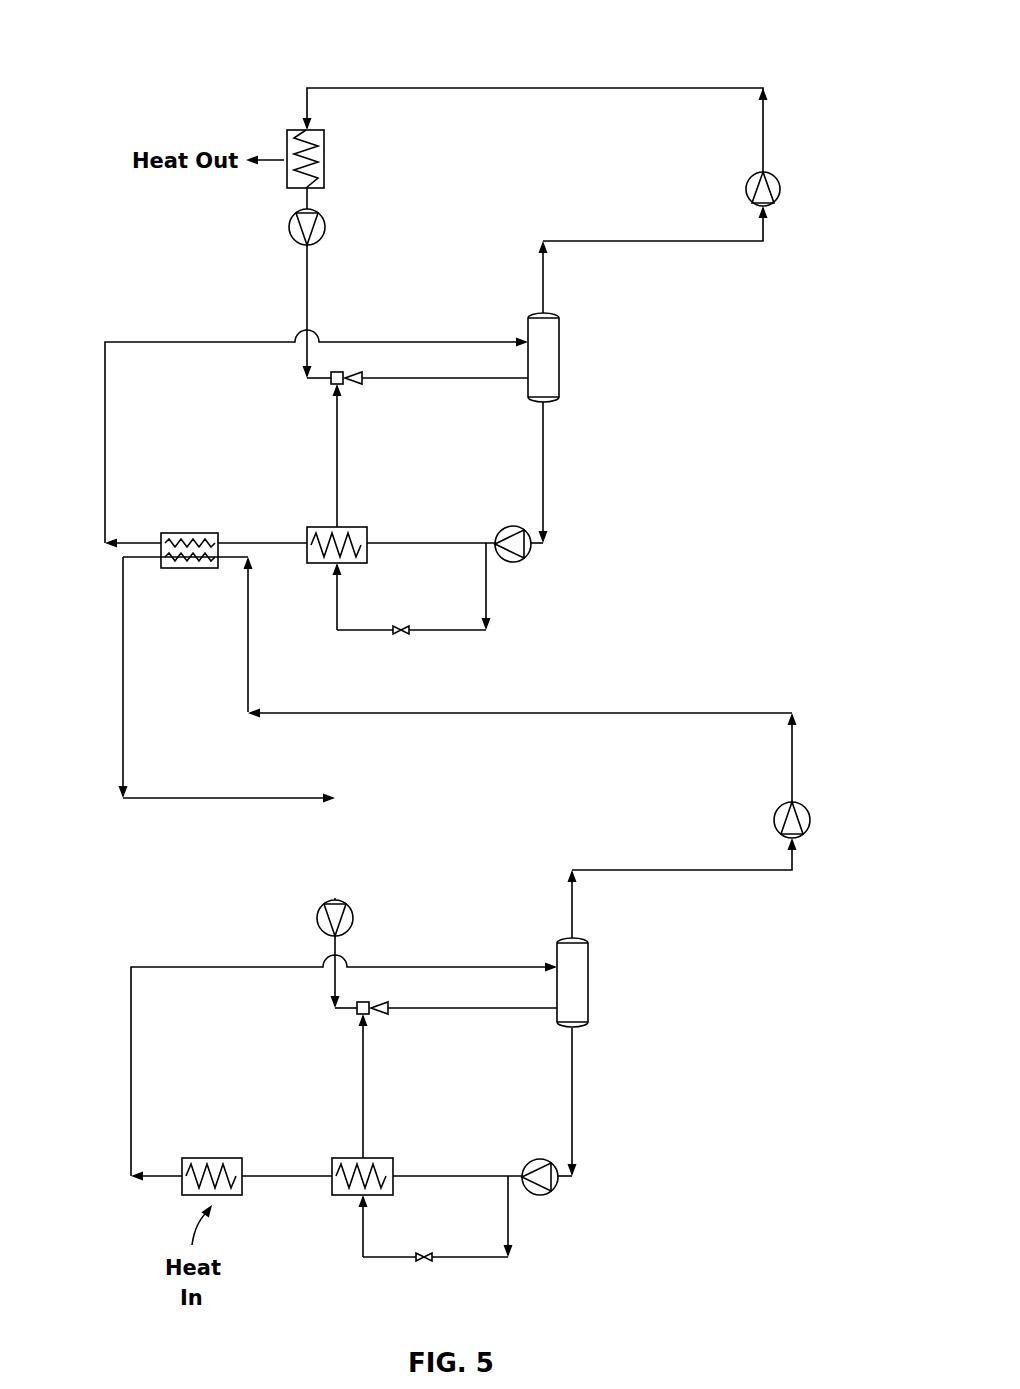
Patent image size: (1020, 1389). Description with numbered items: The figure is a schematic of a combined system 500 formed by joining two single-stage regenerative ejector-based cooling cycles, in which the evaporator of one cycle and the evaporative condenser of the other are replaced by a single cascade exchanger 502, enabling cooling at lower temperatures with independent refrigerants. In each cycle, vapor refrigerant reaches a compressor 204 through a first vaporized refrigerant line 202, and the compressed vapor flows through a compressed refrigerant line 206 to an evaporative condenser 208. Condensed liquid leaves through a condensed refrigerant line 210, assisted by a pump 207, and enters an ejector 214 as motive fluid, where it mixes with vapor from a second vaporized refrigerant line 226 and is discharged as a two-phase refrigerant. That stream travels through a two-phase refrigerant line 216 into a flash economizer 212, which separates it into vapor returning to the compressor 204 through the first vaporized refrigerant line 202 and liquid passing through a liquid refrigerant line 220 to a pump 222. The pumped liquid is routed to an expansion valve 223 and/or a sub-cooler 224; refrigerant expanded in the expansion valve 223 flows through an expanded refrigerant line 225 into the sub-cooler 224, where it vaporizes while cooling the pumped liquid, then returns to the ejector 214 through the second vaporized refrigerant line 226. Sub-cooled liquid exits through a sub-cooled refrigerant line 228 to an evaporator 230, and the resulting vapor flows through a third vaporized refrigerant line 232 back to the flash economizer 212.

The heat pump system 500 is at (747, 32).
The first vaporized refrigerant line 202 is at (765, 233).
The compressor 204 is at (780, 178).
The compressed refrigerant line 206 is at (765, 130).
The pump 207 is at (291, 215).
The evaporative condenser 208 is at (325, 143).
The condensed refrigerant line 210 is at (305, 275).
The flash economizer 212 is at (560, 380).
The ejector 214 is at (337, 372).
The two-phase refrigerant line 216 is at (450, 378).
The liquid refrigerant line 220 is at (545, 490).
The pump 222 is at (522, 560).
The expansion valve 223 is at (405, 636).
The sub-cooler 224 is at (332, 527).
The expanded refrigerant line 225 is at (347, 632).
The second vaporized refrigerant line 226 is at (338, 497).
The sub-cooled refrigerant line 228 is at (262, 545).
The evaporator 230 is at (213, 1158).
The third vaporized refrigerant line 232 is at (128, 1070).
The cascade exchanger 502 is at (193, 533).